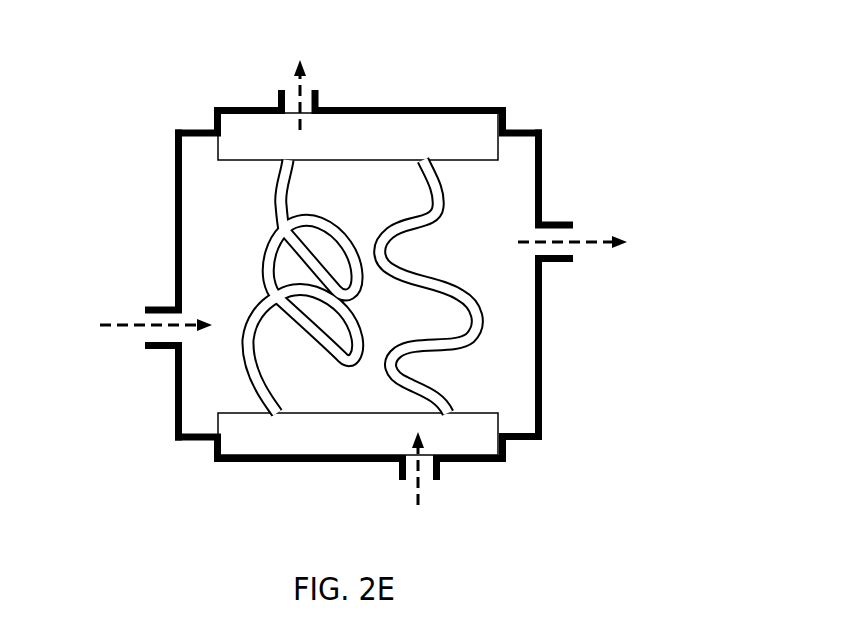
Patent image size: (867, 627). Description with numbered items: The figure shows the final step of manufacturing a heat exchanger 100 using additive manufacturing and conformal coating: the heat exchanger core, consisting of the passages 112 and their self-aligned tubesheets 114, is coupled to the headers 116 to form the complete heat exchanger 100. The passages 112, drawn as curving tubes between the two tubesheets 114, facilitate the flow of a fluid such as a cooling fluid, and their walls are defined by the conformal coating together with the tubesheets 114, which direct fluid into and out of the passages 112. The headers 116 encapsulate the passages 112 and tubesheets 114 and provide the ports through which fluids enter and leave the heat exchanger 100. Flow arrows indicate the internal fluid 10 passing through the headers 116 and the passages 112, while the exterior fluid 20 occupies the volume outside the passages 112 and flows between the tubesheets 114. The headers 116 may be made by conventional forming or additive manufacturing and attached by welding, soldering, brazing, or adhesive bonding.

The heat exchanger 100 is at (409, 285).
The passages 112 is at (480, 335).
The tubesheets 114 is at (378, 158).
The headers 116 is at (175, 267).
The internal fluid 10 is at (362, 286).
The exterior fluid 20 is at (358, 285).